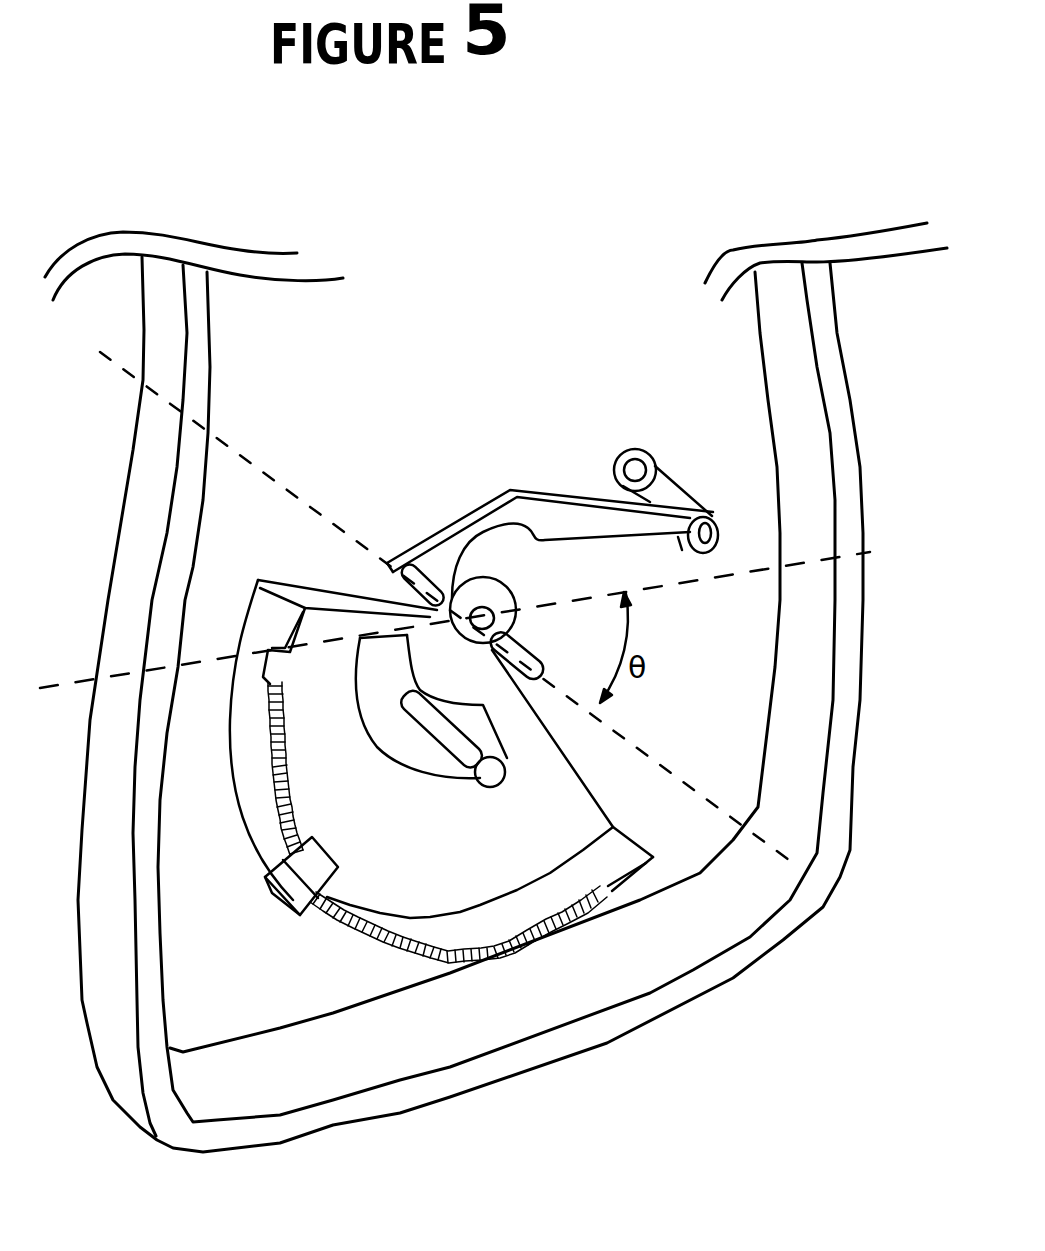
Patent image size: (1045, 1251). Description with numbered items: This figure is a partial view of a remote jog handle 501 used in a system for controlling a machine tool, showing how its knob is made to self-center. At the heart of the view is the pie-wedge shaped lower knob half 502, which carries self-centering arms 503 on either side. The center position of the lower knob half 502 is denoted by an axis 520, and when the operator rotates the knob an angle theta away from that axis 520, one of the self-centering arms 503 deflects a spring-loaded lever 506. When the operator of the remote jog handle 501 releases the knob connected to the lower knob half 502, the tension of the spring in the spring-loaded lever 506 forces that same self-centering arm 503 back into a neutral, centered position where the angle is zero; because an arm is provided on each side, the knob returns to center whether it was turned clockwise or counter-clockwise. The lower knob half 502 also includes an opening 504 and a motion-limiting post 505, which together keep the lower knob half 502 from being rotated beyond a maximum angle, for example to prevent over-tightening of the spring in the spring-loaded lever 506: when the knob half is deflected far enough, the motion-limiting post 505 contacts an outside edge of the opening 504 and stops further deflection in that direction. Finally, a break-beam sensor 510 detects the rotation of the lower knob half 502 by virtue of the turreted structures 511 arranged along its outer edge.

The remote jog handle 501 is at (600, 1055).
The lower knob half 502 is at (235, 818).
The self-centering arms 503 is at (398, 583).
The opening 504 is at (364, 729).
The motion-limiting post 505 is at (505, 790).
The spring-loaded lever 506 is at (457, 527).
The break-beam sensor 510 is at (290, 918).
The turreted structures 511 is at (468, 940).
The axis 520 is at (736, 575).